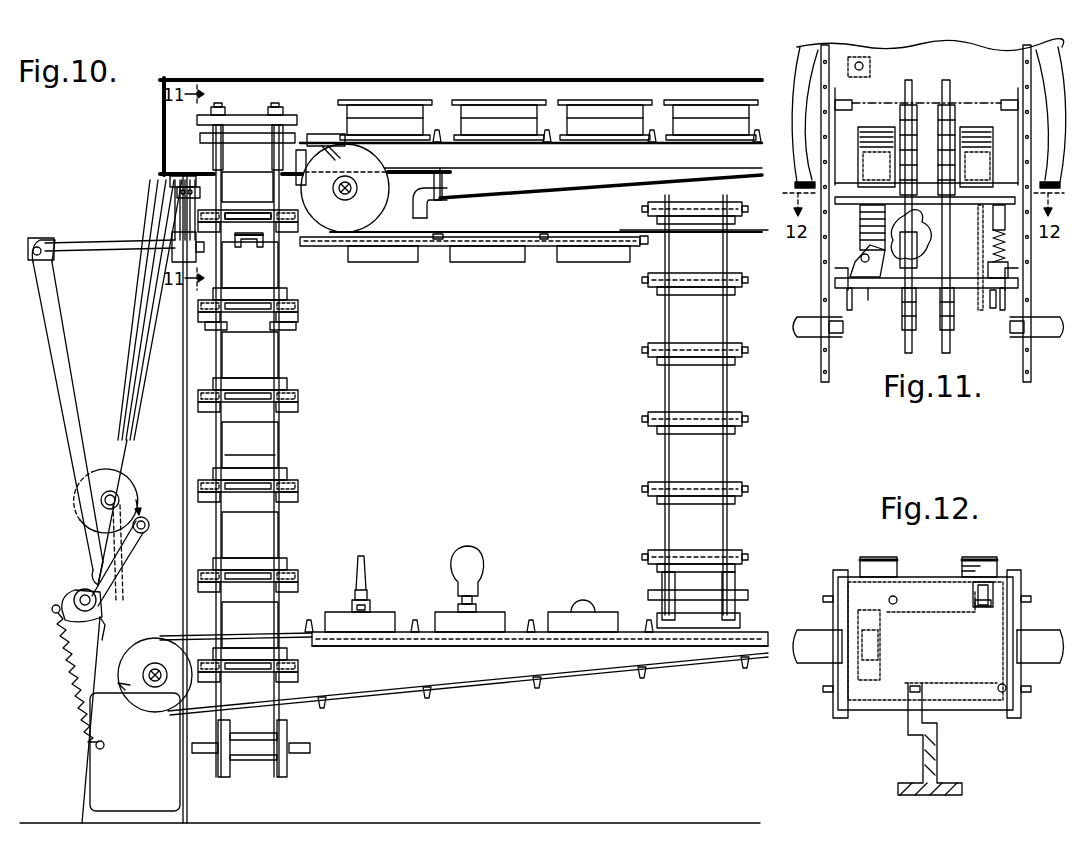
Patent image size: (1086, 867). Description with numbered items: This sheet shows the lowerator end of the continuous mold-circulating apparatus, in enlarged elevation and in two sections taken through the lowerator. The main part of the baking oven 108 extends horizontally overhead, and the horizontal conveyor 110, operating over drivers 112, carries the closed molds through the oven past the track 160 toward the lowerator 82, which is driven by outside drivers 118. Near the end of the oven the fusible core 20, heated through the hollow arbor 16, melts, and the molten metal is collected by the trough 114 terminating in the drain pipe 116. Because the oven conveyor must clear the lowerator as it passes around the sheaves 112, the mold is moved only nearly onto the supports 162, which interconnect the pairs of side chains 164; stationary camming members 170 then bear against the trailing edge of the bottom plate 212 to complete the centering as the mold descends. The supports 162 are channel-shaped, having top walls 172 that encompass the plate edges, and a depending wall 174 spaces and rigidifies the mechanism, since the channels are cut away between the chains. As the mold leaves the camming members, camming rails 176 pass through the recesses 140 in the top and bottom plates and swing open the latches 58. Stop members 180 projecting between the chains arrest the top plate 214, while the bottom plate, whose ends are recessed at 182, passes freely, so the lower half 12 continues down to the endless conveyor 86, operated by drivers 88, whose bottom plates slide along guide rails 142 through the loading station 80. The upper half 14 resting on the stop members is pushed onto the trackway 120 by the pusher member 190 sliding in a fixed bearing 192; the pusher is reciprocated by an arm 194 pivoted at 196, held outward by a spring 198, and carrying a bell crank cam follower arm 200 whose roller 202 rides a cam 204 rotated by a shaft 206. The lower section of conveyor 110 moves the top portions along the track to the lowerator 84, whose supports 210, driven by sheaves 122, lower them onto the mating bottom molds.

In FIG. 10, the lower half of the mold 12 is at (598, 120).
In FIG. 11, the lower half of the mold 12 is at (926, 290).
In FIG. 10, the upper half of the mold 14 is at (500, 116).
In FIG. 11, the upper half of the mold 14 is at (926, 215).
In FIG. 10, the core-supporting arbor 16 is at (368, 578).
In FIG. 10, the fusible core 20 is at (478, 565).
In FIG. 11, the latches 58 is at (912, 233).
In FIG. 12, the latches 58 is at (981, 607).
In FIG. 10, the loading station 80 is at (484, 690).
In FIG. 10, the lowerator 82 is at (252, 772).
In FIG. 11, the lowerator 82 is at (1004, 366).
In FIG. 12, the lowerator 82 is at (1045, 613).
In FIG. 10, the lowerator 84 is at (703, 678).
In FIG. 10, the endless conveyor 86 is at (573, 676).
In FIG. 10, the drivers 88 is at (148, 695).
In FIG. 10, the baking oven 108 is at (526, 79).
In FIG. 10, the horizontal conveyor 110 is at (518, 144).
In FIG. 11, the horizontal conveyor 110 is at (906, 82).
In FIG. 10, the drivers 112 is at (370, 193).
In FIG. 11, the drivers 112 is at (918, 110).
In FIG. 10, the trough 114 is at (548, 184).
In FIG. 10, the drain pipe 116 is at (430, 211).
In FIG. 10, the outside drivers 118 is at (310, 770).
In FIG. 11, the outside drivers 118 is at (798, 72).
In FIG. 10, the trackway 120 is at (438, 249).
In FIG. 10, the outside drivers 122 is at (746, 592).
In FIG. 11, the recesses 140 is at (910, 200).
In FIG. 12, the recesses 140 is at (972, 590).
In FIG. 10, the guide rails 142 is at (370, 647).
In FIG. 10, the track of the oven 160 is at (330, 134).
In FIG. 11, the track of the oven 160 is at (833, 90).
In FIG. 10, the supports 162 is at (285, 106).
In FIG. 11, the supports 162 is at (821, 284).
In FIG. 12, the supports 162 is at (1015, 718).
In FIG. 10, the side chains 164 is at (274, 455).
In FIG. 11, the side chains 164 is at (821, 249).
In FIG. 12, the side chains 164 is at (1025, 593).
In FIG. 10, the camming members 170 is at (300, 150).
In FIG. 11, the camming members 170 is at (862, 146).
In FIG. 12, the camming members 170 is at (870, 557).
In FIG. 11, the top walls 172 is at (838, 276).
In FIG. 10, the depending wall 174 is at (290, 323).
In FIG. 11, the depending wall 174 is at (821, 300).
In FIG. 10, the camming rails 176 is at (200, 205).
In FIG. 11, the camming rails 176 is at (990, 256).
In FIG. 12, the camming rails 176 is at (990, 590).
In FIG. 10, the stop members 180 is at (246, 248).
In FIG. 11, the stop members 180 is at (803, 338).
In FIG. 12, the stop members 180 is at (805, 653).
In FIG. 10, the recesses 182 is at (243, 313).
In FIG. 12, the recesses 182 is at (835, 670).
In FIG. 10, the pusher member 190 is at (92, 254).
In FIG. 10, the fixed bearing 192 is at (172, 252).
In FIG. 10, the arm 194 is at (50, 375).
In FIG. 10, the pivot 196 is at (74, 596).
In FIG. 10, the spring 198 is at (65, 663).
In FIG. 10, the bell crank cam follower arm 200 is at (120, 572).
In FIG. 10, the cam follower roller 202 is at (147, 530).
In FIG. 10, the cam 204 is at (131, 503).
In FIG. 10, the shaft 206 is at (109, 490).
In FIG. 10, the supports 210 is at (688, 280).
In FIG. 10, the bottom plate 212 is at (240, 213).
In FIG. 11, the bottom plate 212 is at (868, 290).
In FIG. 10, the top plate 214 is at (247, 176).
In FIG. 11, the top plate 214 is at (873, 197).
In FIG. 12, the top plate 214 is at (925, 577).